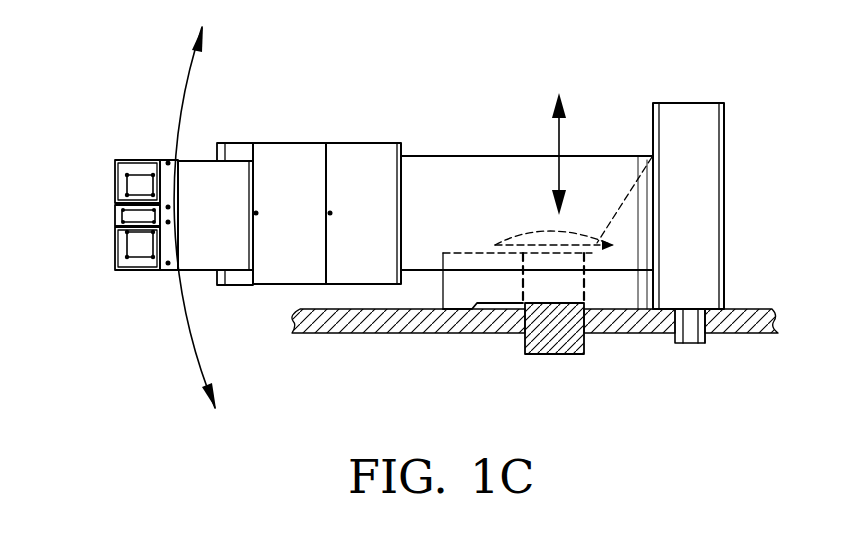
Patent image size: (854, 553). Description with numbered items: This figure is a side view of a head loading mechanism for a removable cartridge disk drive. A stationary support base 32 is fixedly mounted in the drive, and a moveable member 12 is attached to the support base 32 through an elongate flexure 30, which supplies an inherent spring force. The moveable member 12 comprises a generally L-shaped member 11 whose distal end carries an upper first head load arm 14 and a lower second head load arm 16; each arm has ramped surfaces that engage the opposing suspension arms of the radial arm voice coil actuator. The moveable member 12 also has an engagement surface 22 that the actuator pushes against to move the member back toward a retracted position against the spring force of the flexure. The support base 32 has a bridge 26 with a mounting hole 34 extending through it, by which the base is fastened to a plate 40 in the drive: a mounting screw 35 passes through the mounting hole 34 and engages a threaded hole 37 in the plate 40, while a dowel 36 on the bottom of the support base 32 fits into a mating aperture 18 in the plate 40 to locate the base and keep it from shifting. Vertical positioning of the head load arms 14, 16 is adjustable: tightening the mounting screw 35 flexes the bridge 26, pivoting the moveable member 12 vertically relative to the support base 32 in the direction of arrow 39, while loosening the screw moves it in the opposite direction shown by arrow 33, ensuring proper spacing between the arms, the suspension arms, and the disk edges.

The L-shaped member 11 is at (197, 172).
The moveable member 12 is at (290, 142).
The first head load arm 14 is at (115, 182).
The second head load arm 16 is at (113, 243).
The mating aperture 18 is at (708, 335).
The engagement surface 22 is at (362, 177).
The bridge 26 is at (462, 292).
The elongate flexure 30 is at (458, 153).
The support base 32 is at (693, 103).
The arrow 33 is at (185, 327).
The mounting hole 34 is at (522, 281).
The mounting screw 35 is at (548, 357).
The dowel 36 is at (687, 345).
The threaded hole 37 is at (587, 330).
The arrow 39 is at (182, 108).
The plate 40 is at (742, 312).